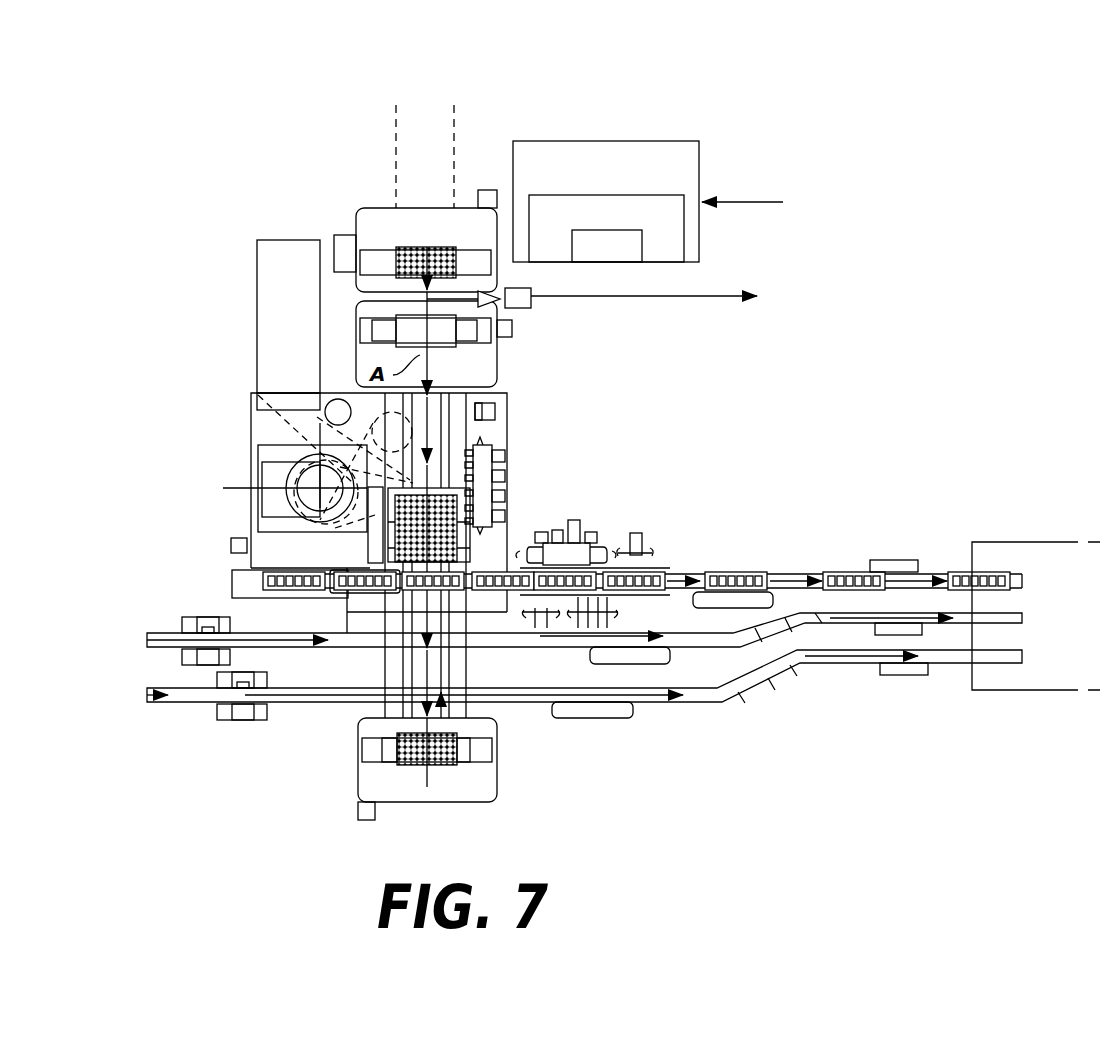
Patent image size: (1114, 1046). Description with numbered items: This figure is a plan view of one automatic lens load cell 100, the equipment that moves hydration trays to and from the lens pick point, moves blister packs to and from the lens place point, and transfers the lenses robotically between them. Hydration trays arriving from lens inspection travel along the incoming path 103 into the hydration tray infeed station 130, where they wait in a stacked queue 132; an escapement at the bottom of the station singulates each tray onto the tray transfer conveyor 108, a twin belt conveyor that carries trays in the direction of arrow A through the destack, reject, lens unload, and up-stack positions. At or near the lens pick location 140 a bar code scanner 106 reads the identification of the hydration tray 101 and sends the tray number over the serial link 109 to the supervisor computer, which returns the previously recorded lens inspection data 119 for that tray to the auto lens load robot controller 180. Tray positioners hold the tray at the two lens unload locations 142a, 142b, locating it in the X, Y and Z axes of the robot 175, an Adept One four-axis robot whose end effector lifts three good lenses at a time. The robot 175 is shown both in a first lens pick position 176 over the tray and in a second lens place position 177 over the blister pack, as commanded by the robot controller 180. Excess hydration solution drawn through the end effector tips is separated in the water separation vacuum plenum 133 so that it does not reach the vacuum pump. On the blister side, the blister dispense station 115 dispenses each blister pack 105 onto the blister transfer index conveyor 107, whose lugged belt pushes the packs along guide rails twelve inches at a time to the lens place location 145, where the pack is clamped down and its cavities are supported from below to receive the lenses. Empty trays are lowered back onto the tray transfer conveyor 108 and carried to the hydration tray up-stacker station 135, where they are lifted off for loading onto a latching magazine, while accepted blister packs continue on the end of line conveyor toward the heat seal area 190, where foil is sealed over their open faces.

The automatic lens load cell 100 is at (568, 126).
The auto lens load robot controller 180 is at (663, 140).
The lens inspection data 119 is at (732, 200).
The transfer path 103 is at (455, 148).
The hydration tray infeed station 130 is at (352, 218).
The stacked queue 132 is at (478, 250).
The water separation vacuum plenum 133 is at (328, 392).
The first lens pick position 176 is at (258, 395).
The robot 175 is at (313, 485).
The second lens place position 177 is at (335, 528).
The blister dispense station 115 is at (247, 568).
The blister pack 105 is at (303, 591).
The lens place location 145 is at (408, 593).
The blister transfer index conveyor 107 is at (690, 570).
The tray transfer conveyor 108 is at (450, 413).
The hydration tray 101 is at (470, 490).
The lens pick location 140 is at (460, 542).
The lens unload location 142b is at (460, 530).
The lens unload location 142a is at (460, 553).
The bar code scanner 106 is at (538, 311).
The serial link 109 is at (693, 296).
The heat seal area 190 is at (1062, 597).
The hydration tray up-stacker station 135 is at (472, 763).